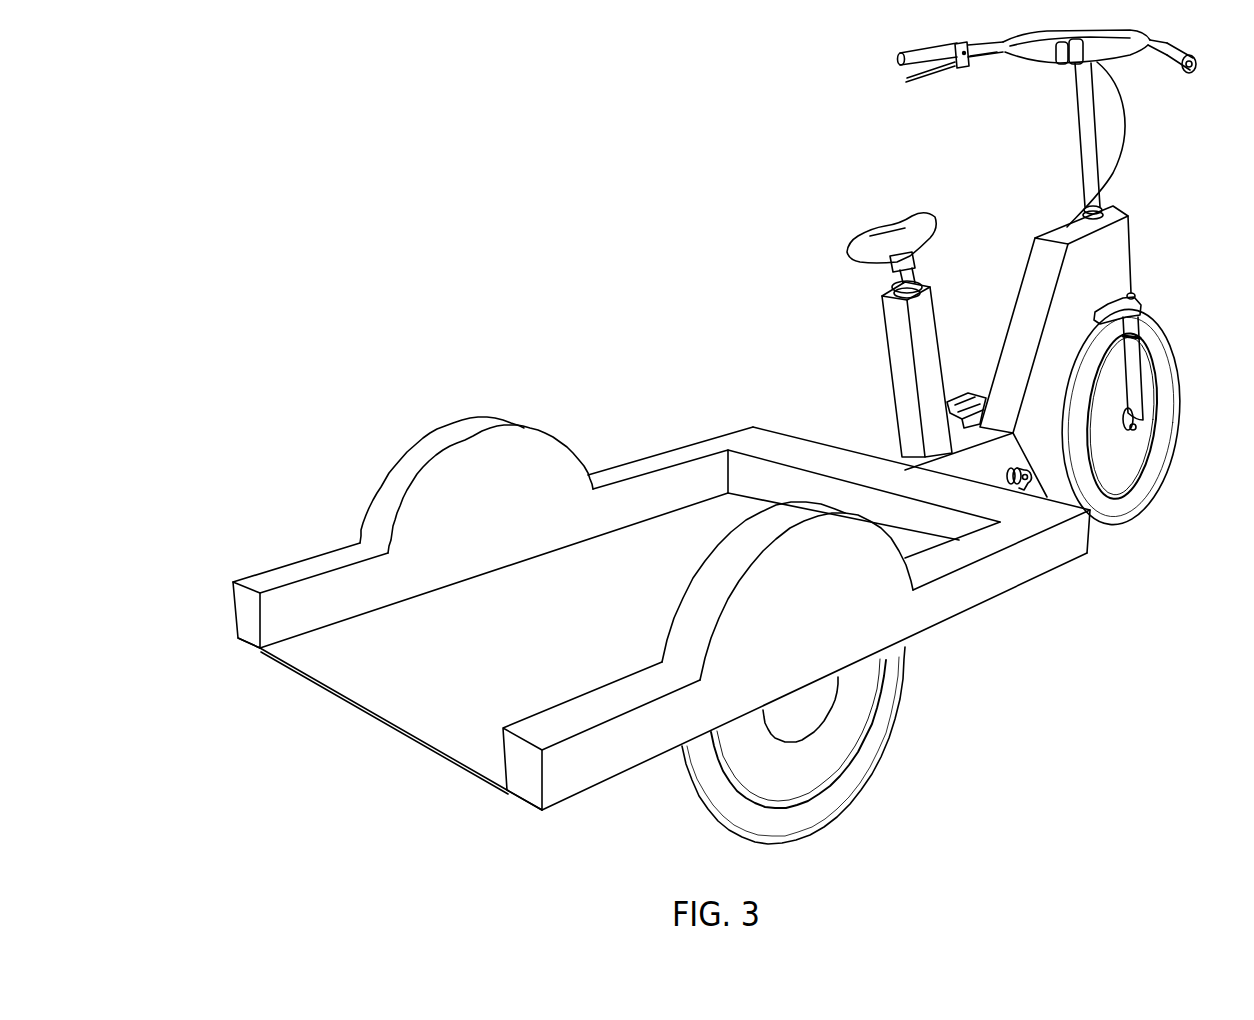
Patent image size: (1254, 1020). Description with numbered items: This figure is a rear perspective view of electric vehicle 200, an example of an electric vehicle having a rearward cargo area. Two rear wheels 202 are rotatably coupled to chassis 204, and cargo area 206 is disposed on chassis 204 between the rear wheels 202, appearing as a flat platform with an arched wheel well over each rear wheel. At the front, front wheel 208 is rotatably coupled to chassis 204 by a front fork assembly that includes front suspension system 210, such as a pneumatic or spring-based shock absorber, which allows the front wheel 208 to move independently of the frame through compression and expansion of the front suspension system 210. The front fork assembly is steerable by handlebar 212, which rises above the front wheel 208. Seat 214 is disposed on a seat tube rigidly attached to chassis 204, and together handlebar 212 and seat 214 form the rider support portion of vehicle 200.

The electric vehicle 200 is at (149, 162).
The rear wheels 202 is at (586, 436).
The chassis 204 is at (983, 598).
The cargo area 206 is at (314, 713).
The front wheel 208 is at (1193, 410).
The front suspension system 210 is at (1143, 302).
The handlebar 212 is at (1071, 36).
The seat 214 is at (887, 212).